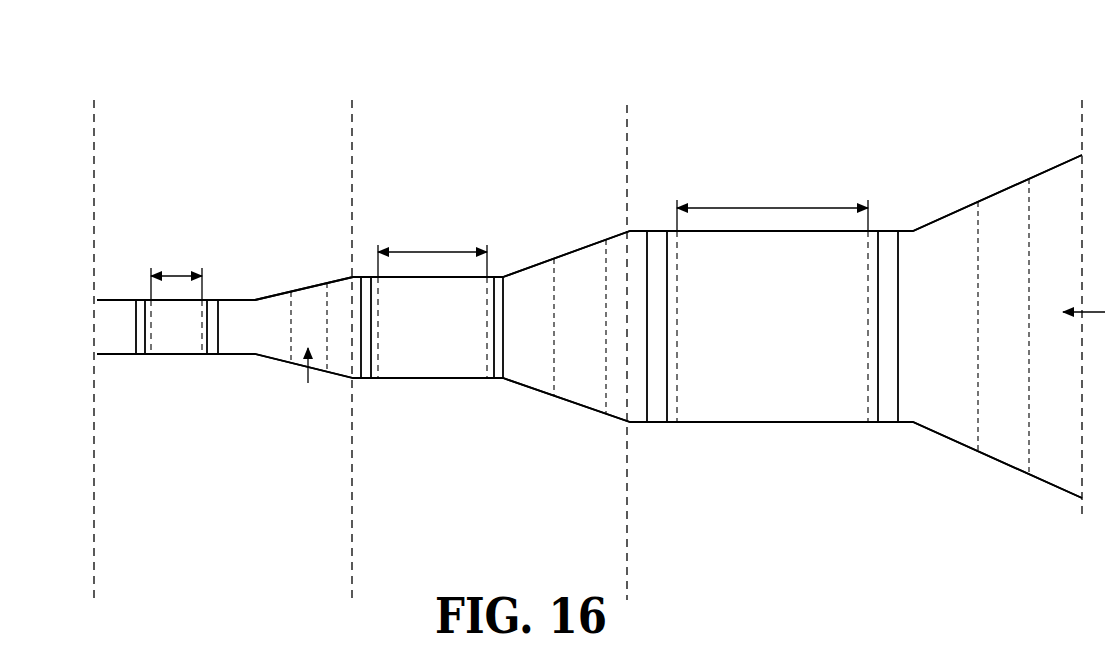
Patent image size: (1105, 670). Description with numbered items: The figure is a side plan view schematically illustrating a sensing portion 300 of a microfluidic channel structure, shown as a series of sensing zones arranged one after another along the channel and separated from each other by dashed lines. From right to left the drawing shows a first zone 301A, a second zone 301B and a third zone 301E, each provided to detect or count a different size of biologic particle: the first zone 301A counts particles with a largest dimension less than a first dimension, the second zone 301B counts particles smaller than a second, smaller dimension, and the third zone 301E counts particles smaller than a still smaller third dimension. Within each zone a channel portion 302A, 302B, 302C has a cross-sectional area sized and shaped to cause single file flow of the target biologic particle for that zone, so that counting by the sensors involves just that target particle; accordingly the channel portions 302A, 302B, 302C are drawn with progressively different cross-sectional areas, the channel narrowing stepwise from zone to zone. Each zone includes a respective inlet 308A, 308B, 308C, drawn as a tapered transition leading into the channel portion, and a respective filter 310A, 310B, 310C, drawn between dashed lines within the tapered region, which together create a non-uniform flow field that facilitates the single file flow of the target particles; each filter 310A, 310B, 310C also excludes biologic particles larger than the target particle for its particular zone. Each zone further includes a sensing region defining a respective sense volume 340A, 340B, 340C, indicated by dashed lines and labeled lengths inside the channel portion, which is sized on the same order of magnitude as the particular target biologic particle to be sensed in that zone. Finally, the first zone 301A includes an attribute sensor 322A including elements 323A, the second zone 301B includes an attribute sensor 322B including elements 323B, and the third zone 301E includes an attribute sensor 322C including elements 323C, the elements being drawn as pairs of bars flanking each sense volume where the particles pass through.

The sensing portion 300 is at (609, 62).
The first zone 301A is at (853, 152).
The second zone 301B is at (529, 152).
The third zone 301E is at (245, 152).
The channel portion 302A is at (782, 424).
The channel portion 302B is at (452, 380).
The channel portion 302C is at (233, 299).
The inlet 308A is at (947, 214).
The inlet 308B is at (533, 264).
The inlet 308C is at (268, 296).
The filter 310A is at (1006, 188).
The filter 310B is at (578, 249).
The filter 310C is at (302, 425).
The attribute sensor 322A is at (645, 436).
The attribute sensor 322B is at (376, 389).
The attribute sensor 322C is at (226, 368).
The elements 323A is at (657, 424).
The elements 323B is at (497, 380).
The elements 323C is at (140, 357).
The sense volume 340A is at (736, 297).
The sense volume 340B is at (406, 332).
The sense volume 340C is at (172, 343).